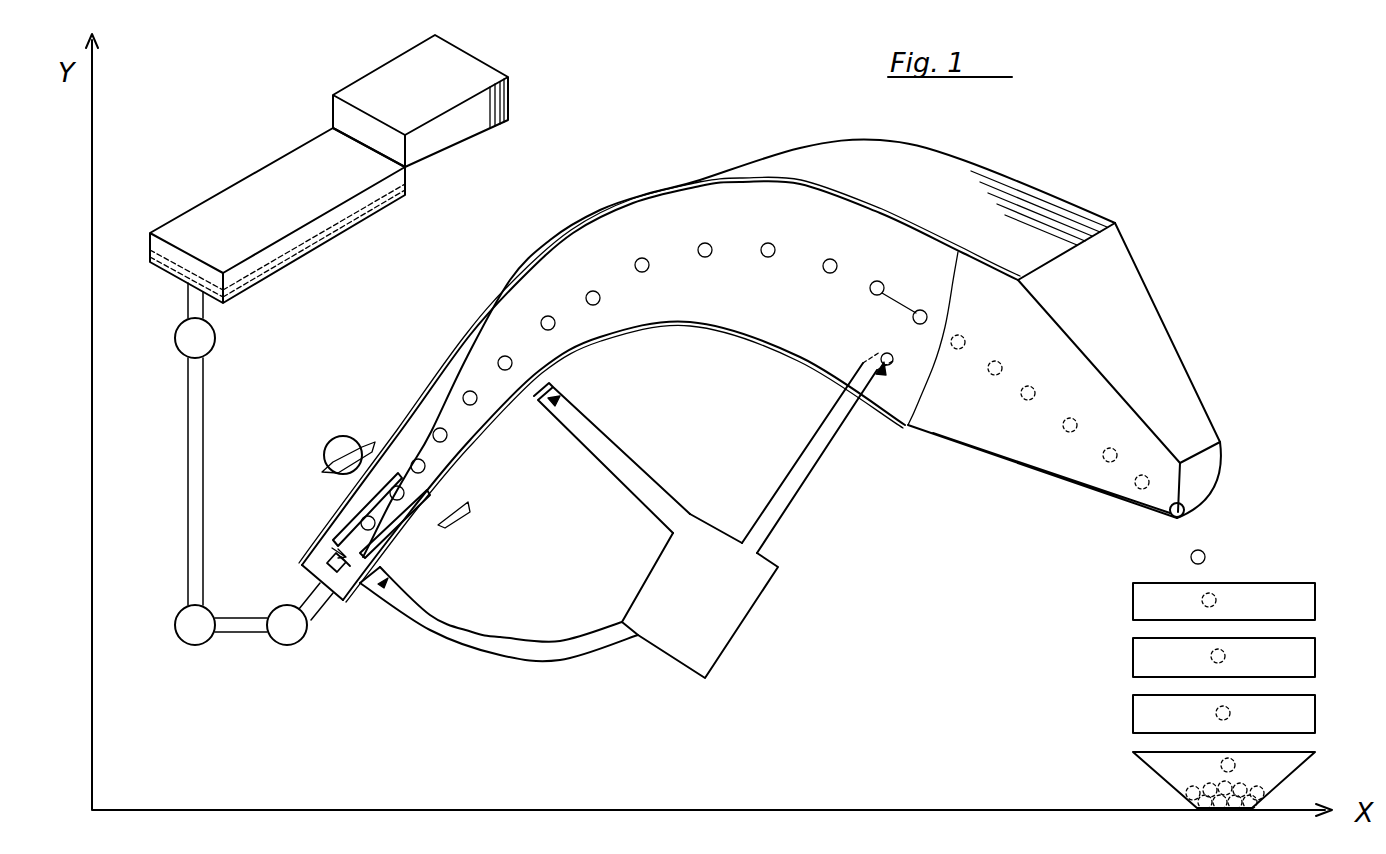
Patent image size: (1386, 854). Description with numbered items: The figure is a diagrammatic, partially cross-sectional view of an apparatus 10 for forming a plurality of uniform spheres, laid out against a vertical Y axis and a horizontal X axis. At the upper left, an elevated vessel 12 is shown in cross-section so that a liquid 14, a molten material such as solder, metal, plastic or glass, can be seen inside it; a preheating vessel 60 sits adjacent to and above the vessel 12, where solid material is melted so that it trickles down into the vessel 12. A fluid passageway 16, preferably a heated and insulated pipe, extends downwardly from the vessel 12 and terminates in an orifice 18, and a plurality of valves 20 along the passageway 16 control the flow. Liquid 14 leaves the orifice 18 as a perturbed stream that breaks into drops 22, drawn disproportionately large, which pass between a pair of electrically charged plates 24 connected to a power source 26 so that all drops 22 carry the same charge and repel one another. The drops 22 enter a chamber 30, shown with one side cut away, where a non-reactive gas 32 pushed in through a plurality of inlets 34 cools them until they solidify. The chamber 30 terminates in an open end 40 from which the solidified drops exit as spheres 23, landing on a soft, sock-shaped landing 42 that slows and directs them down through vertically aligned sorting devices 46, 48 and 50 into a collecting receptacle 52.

The apparatus 10 is at (1052, 153).
The elevated vessel 12 is at (247, 173).
The liquid 14 is at (333, 235).
The preheating vessel 60 is at (382, 82).
The fluid passageway 16 is at (185, 388).
The valves 20 is at (175, 331).
The power source 26 is at (335, 445).
The electrically charged plates 24 is at (387, 515).
The orifice 18 is at (322, 545).
The drops 22 is at (442, 445).
The chamber 30 is at (672, 190).
The spheres 23 is at (868, 262).
The inlets 34 is at (385, 586).
The gas 32 is at (634, 628).
The landing 42 is at (1176, 394).
The open end 40 is at (1210, 495).
The sorting device 46 is at (1133, 603).
The sorting device 48 is at (1133, 658).
The sorting device 50 is at (1133, 715).
The receptacle 52 is at (1152, 772).